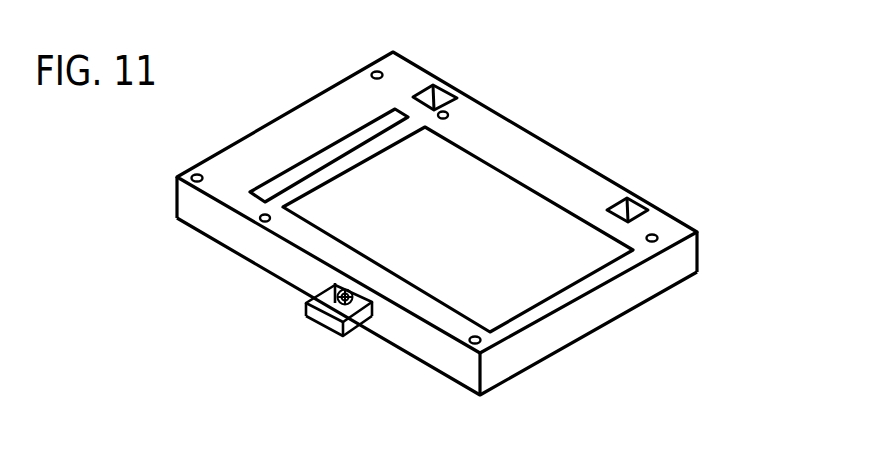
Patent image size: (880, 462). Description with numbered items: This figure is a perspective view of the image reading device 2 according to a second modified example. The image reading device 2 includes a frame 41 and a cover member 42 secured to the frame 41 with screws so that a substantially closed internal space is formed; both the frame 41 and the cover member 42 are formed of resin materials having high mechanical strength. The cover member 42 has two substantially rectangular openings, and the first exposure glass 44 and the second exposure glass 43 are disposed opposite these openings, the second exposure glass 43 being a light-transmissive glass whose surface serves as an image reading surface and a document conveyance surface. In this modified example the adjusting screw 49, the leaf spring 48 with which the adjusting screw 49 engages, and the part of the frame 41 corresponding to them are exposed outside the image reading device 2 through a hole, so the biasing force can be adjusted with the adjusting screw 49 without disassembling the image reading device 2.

The image reading device 2 is at (527, 97).
The frame 41 is at (227, 237).
The cover member 42 is at (560, 162).
The second exposure glass 43 is at (320, 152).
The first exposure glass 44 is at (555, 283).
The leaf spring 48 is at (352, 313).
The adjusting screw 49 is at (345, 305).